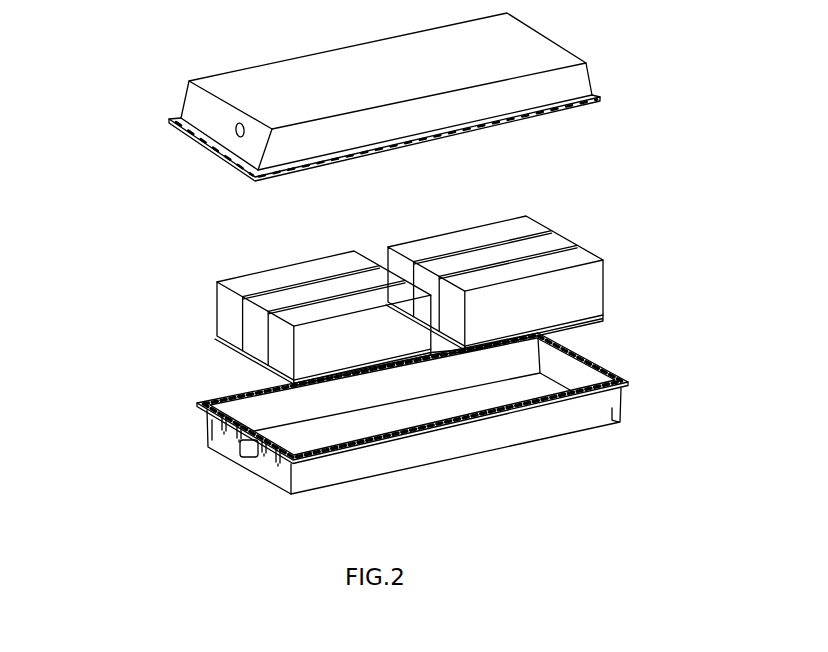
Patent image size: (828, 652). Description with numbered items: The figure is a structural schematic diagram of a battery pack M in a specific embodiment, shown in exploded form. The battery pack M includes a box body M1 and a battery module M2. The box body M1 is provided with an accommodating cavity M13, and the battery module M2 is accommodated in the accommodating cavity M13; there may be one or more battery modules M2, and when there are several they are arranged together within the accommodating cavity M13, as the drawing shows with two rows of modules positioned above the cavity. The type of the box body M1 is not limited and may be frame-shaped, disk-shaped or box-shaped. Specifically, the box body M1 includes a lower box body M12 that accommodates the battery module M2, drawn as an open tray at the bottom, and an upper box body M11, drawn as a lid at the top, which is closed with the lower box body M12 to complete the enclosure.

The battery pack M is at (140, 52).
The box body M1 is at (125, 170).
The upper box body M11 is at (203, 123).
The lower box body M12 is at (197, 403).
The accommodating cavity M13 is at (547, 387).
The battery module M2 is at (553, 240).